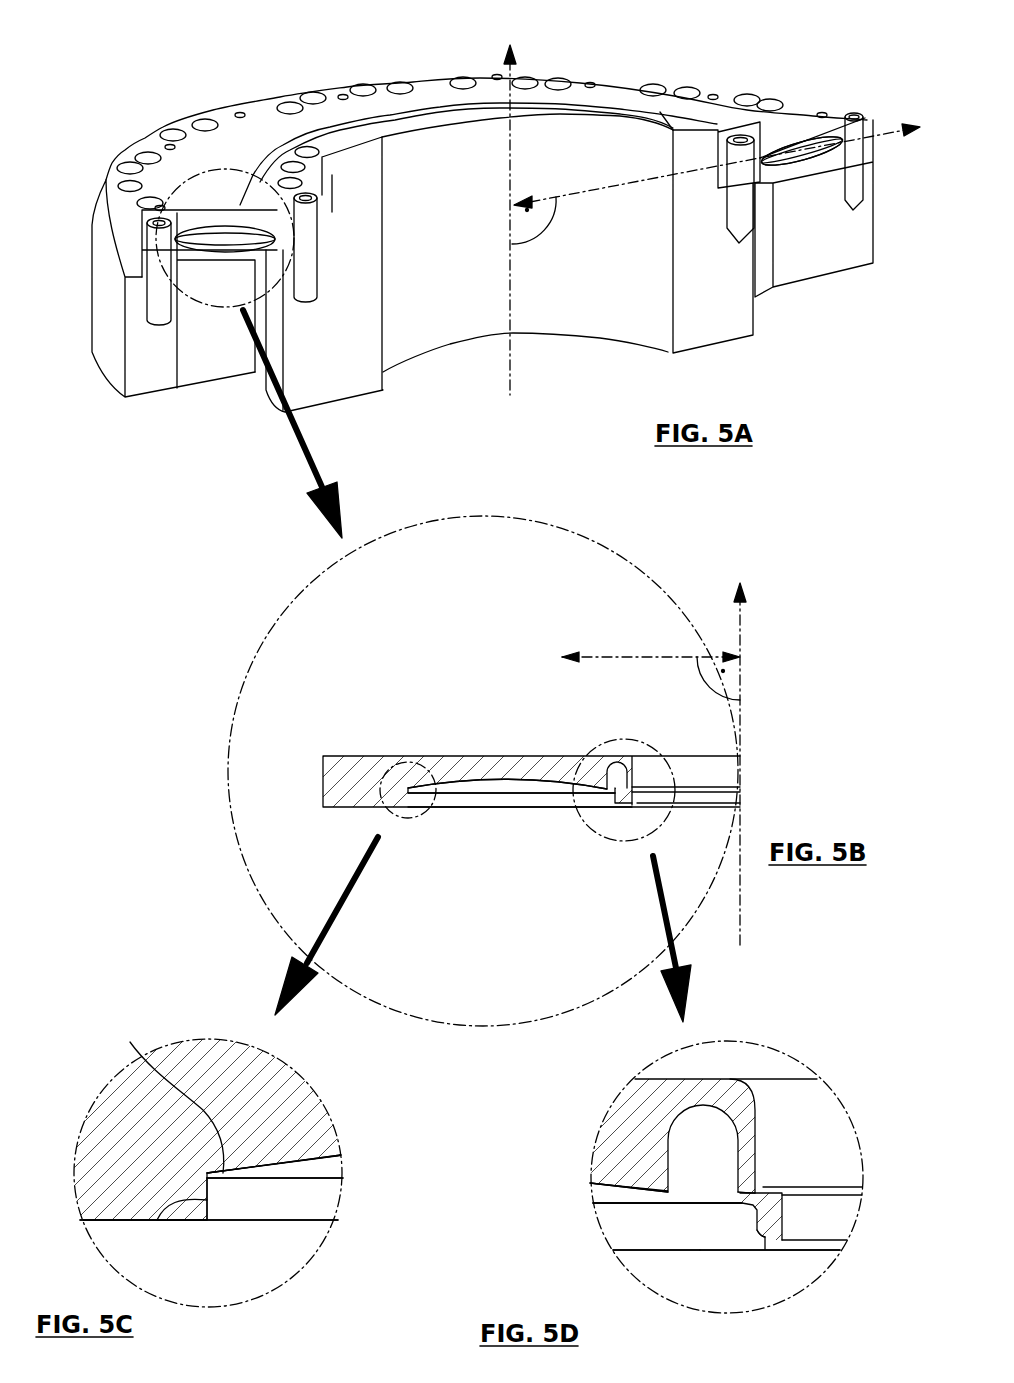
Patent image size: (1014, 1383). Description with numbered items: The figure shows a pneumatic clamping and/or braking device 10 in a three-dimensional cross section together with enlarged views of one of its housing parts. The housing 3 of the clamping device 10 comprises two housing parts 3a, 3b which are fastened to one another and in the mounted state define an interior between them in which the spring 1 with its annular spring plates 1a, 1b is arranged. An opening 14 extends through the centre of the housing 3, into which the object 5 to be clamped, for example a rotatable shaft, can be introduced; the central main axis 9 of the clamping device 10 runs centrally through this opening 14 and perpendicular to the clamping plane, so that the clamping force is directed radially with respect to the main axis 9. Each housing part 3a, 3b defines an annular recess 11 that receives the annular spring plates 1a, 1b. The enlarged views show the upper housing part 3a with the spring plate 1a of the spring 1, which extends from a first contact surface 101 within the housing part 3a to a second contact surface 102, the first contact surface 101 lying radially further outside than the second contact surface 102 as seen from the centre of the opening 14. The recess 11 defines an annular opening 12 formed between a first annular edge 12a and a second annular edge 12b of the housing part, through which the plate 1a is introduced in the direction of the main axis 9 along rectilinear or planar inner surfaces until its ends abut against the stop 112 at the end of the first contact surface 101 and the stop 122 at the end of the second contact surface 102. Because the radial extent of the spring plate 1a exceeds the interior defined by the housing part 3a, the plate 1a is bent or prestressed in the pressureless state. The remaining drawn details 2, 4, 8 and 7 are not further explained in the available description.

In FIG. 5A, the clamping device 10 is at (142, 68).
In FIG. 5A, the housing 3 is at (120, 247).
In FIG. 5A, the housing part 3a is at (225, 162).
In FIG. 5B, the housing part 3a is at (331, 766).
In FIG. 5C, the housing part 3a is at (120, 1130).
In FIG. 5D, the housing part 3a is at (633, 1107).
In FIG. 5A, the housing part 3b is at (871, 190).
In FIG. 5A, the spring element 2 is at (220, 252).
In FIG. 5A, the object to be clamped 5 is at (547, 100).
In FIG. 5A, the spring 1 is at (790, 140).
In FIG. 5A, the spring plate 1a is at (802, 151).
In FIG. 5B, the spring plate 1a is at (484, 800).
In FIG. 5C, the spring plate 1a is at (255, 1207).
In FIG. 5D, the spring plate 1a is at (712, 1228).
In FIG. 5A, the spring plate 1b is at (803, 170).
In FIG. 5A, the main axis 9 is at (510, 377).
In FIG. 5B, the main axis 9 is at (654, 753).
In FIG. 5A, the opening 14 is at (571, 243).
In FIG. 5B, the opening 14 is at (719, 770).
In FIG. 5D, the opening 14 is at (835, 1128).
In FIG. 5B, the recess 11 is at (495, 774).
In FIG. 5C, the recess 11 is at (322, 1160).
In FIG. 5D, the recess 11 is at (713, 1192).
In FIG. 5B, the spring element 4 is at (534, 788).
In FIG. 5C, the spring element 4 is at (275, 1166).
In FIG. 5D, the spring element 4 is at (666, 1193).
In FIG. 5B, the annular opening 12 is at (536, 804).
In FIG. 5C, the annular opening 12 is at (297, 1220).
In FIG. 5D, the annular opening 12 is at (647, 1250).
In FIG. 5C, the first annular edge 12a is at (188, 1220).
In FIG. 5D, the second annular edge 12b is at (772, 1245).
In FIG. 5C, the stop 112 is at (130, 1042).
In FIG. 5C, the first contact surface 101 is at (157, 1220).
In FIG. 5D, the second contact surface 102 is at (760, 1236).
In FIG. 5D, the stop 122 is at (757, 1193).
In FIG. 5B, the retaining element 8 is at (623, 795).
In FIG. 5D, the retaining element 8 is at (768, 1210).
In FIG. 5D, the spacer 7 is at (782, 1230).